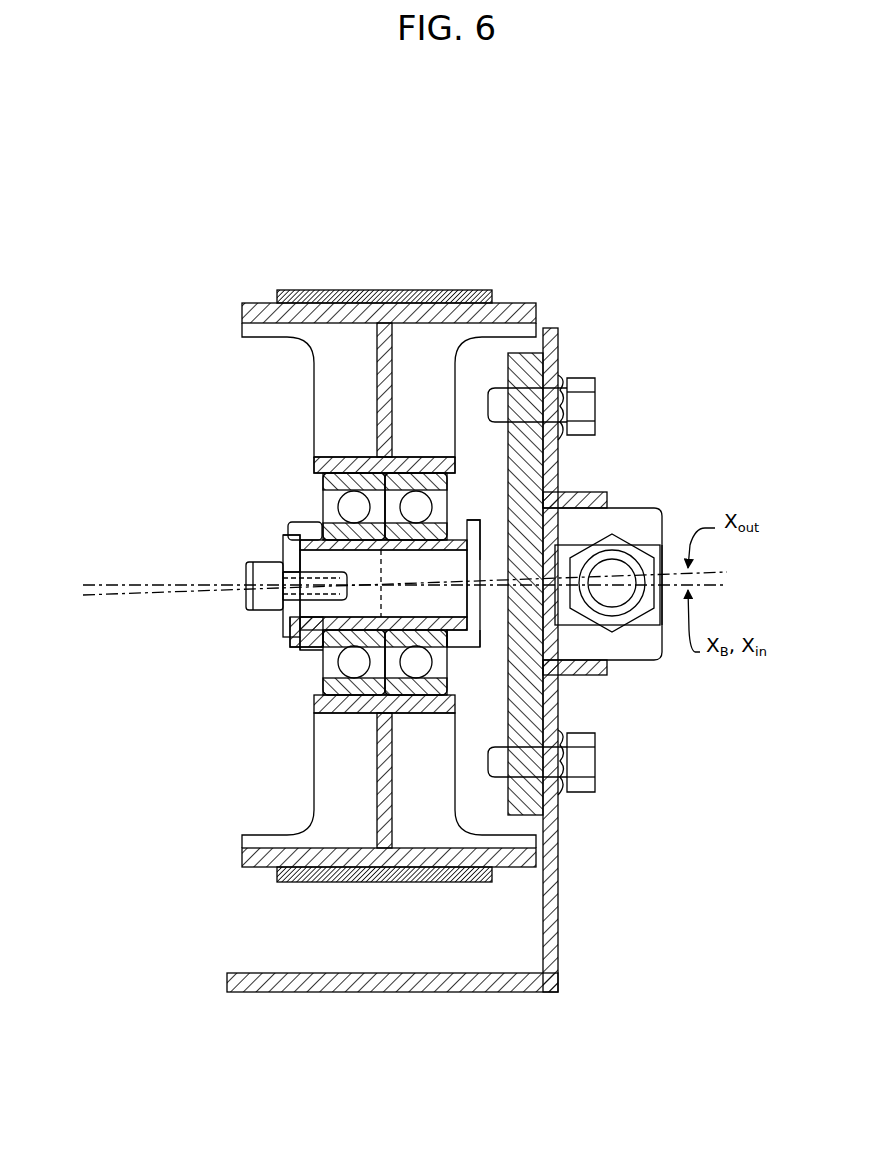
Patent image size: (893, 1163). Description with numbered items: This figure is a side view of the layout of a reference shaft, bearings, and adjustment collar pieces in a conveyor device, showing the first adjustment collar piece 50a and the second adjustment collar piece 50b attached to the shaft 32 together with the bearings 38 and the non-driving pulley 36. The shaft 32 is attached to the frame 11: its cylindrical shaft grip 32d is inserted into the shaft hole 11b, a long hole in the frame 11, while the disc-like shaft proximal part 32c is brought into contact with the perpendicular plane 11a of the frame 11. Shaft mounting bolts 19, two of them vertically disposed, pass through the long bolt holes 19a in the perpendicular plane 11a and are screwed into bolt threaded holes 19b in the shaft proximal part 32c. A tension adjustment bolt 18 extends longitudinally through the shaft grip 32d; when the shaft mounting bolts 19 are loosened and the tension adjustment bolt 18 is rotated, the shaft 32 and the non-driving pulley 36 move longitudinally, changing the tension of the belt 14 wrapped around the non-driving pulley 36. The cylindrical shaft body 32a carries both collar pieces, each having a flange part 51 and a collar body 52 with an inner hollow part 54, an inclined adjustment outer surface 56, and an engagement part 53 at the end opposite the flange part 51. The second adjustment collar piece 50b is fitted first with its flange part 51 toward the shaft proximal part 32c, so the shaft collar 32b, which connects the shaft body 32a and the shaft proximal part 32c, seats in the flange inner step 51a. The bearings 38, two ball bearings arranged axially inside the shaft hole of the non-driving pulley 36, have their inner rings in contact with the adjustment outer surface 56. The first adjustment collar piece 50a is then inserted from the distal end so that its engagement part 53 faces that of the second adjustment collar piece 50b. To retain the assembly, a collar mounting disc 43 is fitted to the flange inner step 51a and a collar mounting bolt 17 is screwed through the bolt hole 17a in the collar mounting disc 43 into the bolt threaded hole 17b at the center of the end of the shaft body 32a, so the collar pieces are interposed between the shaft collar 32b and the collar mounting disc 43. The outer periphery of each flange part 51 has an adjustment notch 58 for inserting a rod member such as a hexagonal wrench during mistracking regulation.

The frame 11 is at (493, 992).
The perpendicular plane 11a is at (560, 925).
The shaft hole 11b is at (590, 515).
The belt 14 is at (425, 290).
The collar mounting bolt 17 is at (246, 596).
The bolt hole 17a is at (280, 572).
The bolt threaded hole 17b is at (290, 550).
The tension adjustment bolt 18 is at (618, 628).
The shaft mounting bolt 19 is at (588, 408).
The bolt hole 19a is at (566, 398).
The bolt threaded hole 19b is at (522, 412).
The shaft 32 is at (642, 503).
The shaft body 32a is at (300, 622).
The shaft collar 32b is at (480, 652).
The shaft proximal part 32c is at (545, 828).
The shaft grip 32d is at (655, 662).
The non-driving pulley 36 is at (314, 797).
The bearings 38 is at (315, 478).
The collar mounting disc 43 is at (290, 552).
The first adjustment collar piece 50a is at (308, 658).
The second adjustment collar piece 50b is at (462, 658).
The flange part 51 is at (302, 655).
The flange inner step 51a is at (297, 650).
The collar body 52 is at (360, 609).
The engagement part 53 is at (382, 610).
The inner hollow part 54 is at (437, 615).
The adjustment outer surface 56 is at (390, 548).
The adjustment notch 58 is at (298, 538).